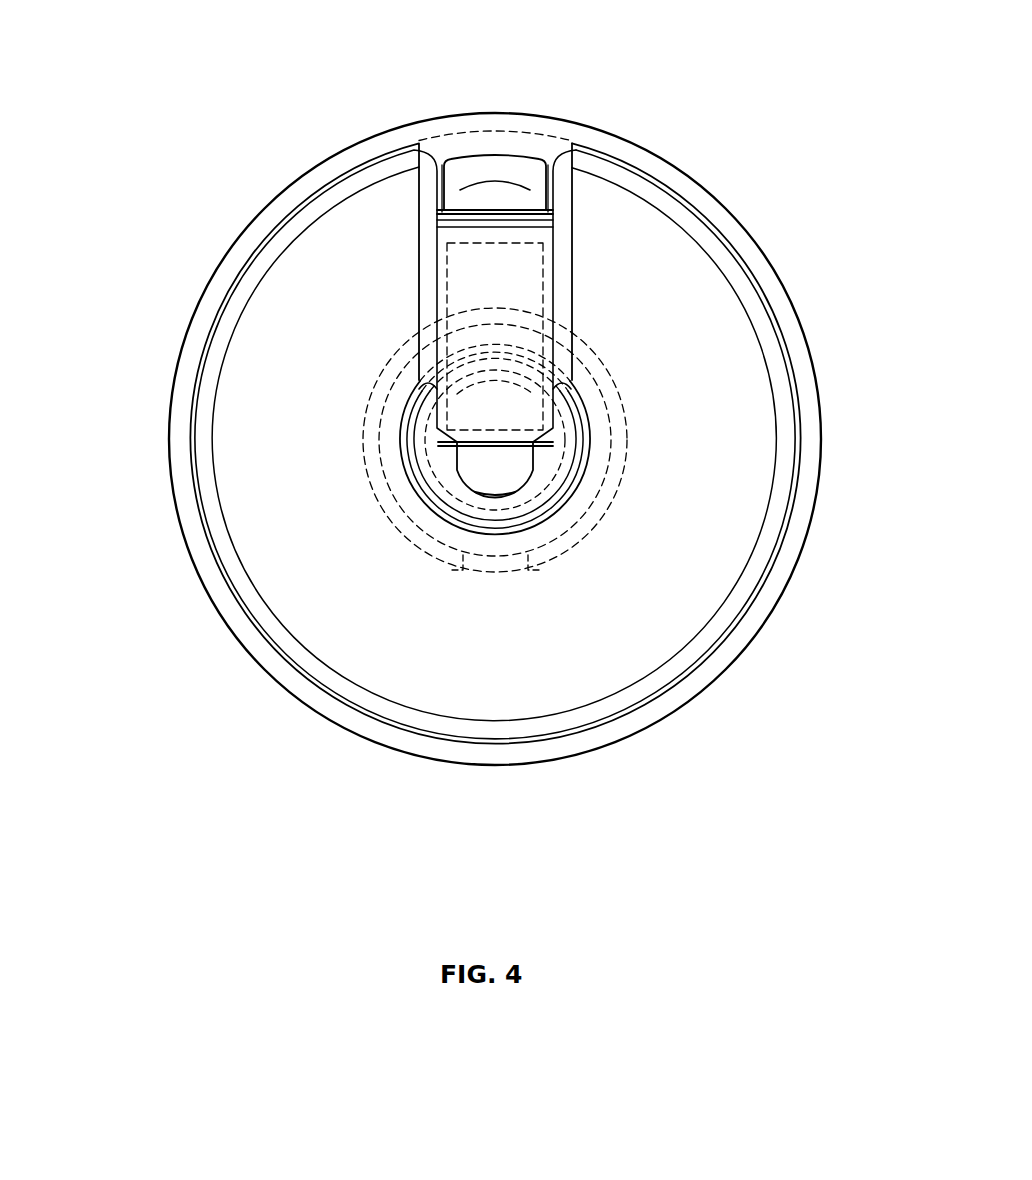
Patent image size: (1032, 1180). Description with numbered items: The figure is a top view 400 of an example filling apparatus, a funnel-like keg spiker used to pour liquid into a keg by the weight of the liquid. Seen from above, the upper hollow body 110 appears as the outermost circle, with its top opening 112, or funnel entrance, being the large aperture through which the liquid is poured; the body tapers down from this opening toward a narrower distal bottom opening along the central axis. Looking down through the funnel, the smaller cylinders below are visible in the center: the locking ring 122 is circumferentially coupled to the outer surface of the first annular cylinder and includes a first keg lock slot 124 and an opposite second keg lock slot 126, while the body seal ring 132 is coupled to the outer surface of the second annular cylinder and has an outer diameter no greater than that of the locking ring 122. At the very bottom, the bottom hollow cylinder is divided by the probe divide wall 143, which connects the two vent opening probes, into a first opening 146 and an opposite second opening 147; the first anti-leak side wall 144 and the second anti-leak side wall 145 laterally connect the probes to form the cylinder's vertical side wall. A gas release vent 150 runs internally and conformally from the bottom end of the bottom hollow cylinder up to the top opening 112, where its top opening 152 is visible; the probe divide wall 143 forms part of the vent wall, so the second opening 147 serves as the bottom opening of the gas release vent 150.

The top view 400 is at (136, 40).
The upper hollow body 110 is at (155, 438).
The top opening 112 is at (180, 518).
The top opening of the gas release vent 152 is at (486, 197).
The gas release vent 150 is at (502, 307).
The second keg lock slot 126 is at (512, 262).
The second opening 147 is at (497, 410).
The second anti-leak side wall 145 is at (497, 370).
The body seal ring 132 is at (405, 434).
The locking ring 122 is at (367, 471).
The first keg lock slot 124 is at (502, 558).
The first anti-leak side wall 144 is at (493, 492).
The first opening 146 is at (458, 474).
The probe divide wall 143 is at (502, 447).